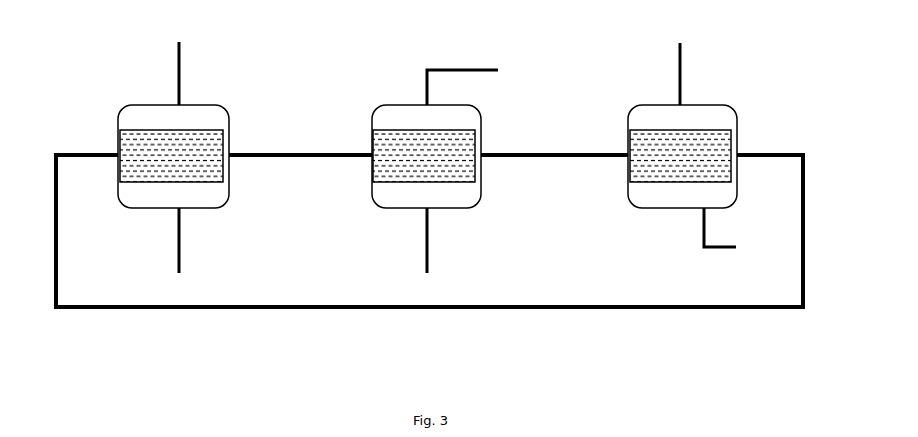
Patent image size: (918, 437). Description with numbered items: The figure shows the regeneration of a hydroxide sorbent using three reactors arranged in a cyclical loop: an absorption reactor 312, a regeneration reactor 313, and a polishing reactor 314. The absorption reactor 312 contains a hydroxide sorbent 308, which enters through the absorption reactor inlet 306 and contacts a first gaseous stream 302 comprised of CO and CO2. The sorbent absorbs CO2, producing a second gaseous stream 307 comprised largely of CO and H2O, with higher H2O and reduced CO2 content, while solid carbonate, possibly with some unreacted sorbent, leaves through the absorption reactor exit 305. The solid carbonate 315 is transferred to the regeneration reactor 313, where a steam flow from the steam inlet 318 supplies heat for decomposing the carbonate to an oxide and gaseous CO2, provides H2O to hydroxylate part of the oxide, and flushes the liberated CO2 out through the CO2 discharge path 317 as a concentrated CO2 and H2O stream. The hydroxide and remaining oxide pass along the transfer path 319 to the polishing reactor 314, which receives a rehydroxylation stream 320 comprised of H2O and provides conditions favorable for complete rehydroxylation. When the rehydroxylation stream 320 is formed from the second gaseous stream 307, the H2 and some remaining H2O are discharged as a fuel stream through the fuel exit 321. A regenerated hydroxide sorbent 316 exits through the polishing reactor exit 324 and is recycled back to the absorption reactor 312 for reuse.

The first gaseous stream 302 is at (180, 237).
The absorption reactor exit 305 is at (327, 154).
The absorption reactor inlet 306 is at (78, 154).
The second gaseous stream 307 is at (175, 58).
The hydroxide sorbent 308 is at (133, 142).
The absorption reactor 312 is at (210, 193).
The regeneration reactor 313 is at (465, 193).
The polishing reactor 314 is at (710, 193).
The solid carbonate 315 is at (382, 145).
The regenerated hydroxide sorbent 316 is at (639, 151).
The CO2 discharge path 317 is at (457, 67).
The steam inlet 318 is at (428, 237).
The transfer path 319 is at (522, 154).
The rehydroxylation stream 320 is at (682, 62).
The fuel exit 321 is at (702, 232).
The polishing reactor exit 324 is at (785, 154).